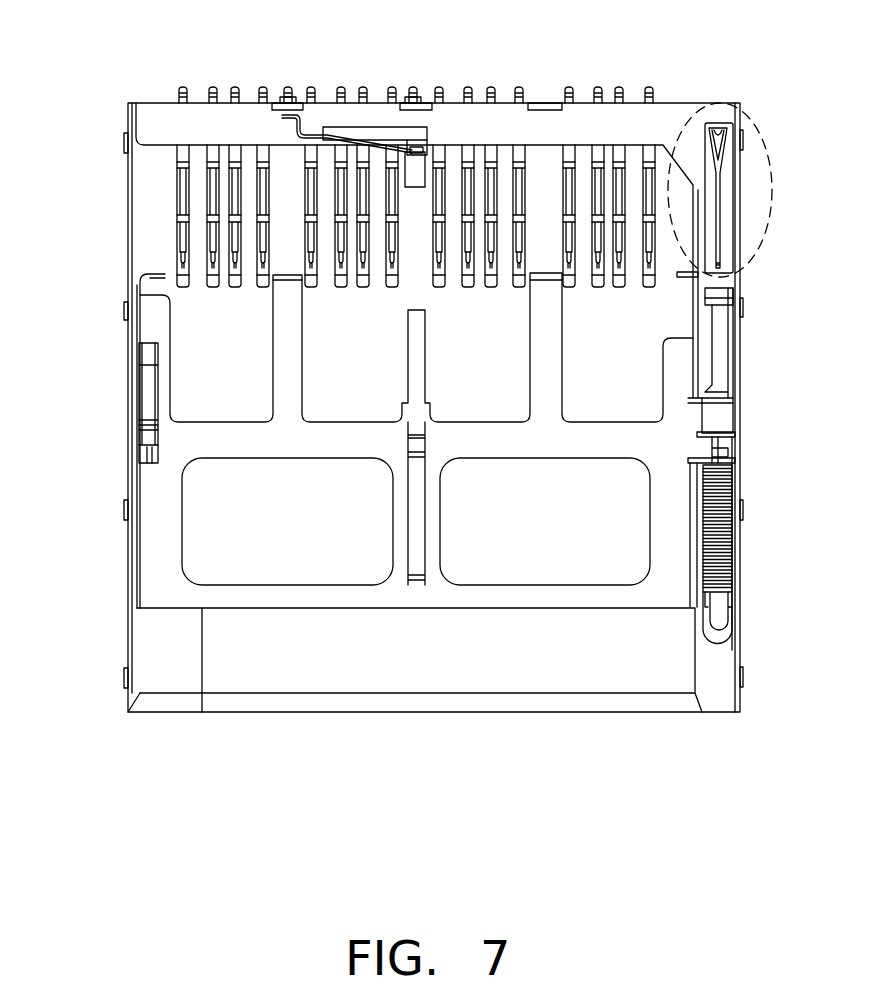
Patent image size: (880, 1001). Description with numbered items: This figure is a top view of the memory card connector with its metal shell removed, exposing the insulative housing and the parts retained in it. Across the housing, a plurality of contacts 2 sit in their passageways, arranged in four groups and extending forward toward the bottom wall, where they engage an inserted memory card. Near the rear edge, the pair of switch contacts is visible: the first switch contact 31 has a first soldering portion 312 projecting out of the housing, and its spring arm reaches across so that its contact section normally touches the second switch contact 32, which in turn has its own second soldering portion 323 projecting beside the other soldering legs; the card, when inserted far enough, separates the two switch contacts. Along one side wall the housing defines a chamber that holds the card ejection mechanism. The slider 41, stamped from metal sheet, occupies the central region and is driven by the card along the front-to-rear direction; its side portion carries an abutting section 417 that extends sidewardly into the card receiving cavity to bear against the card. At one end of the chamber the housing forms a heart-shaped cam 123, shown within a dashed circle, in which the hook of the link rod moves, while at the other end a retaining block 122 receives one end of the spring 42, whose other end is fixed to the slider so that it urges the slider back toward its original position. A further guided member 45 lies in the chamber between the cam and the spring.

The contacts 2 is at (183, 198).
The first switch contact 31 is at (378, 147).
The first soldering portion 312 is at (288, 90).
The second switch contact 32 is at (422, 150).
The second soldering portion 323 is at (413, 88).
The slider 41 is at (157, 531).
The abutting section 417 is at (153, 277).
The heart-shaped cam 123 is at (720, 172).
The ejecting member / slider 45 is at (720, 340).
The spring 42 is at (718, 527).
The retaining block 122 is at (717, 610).